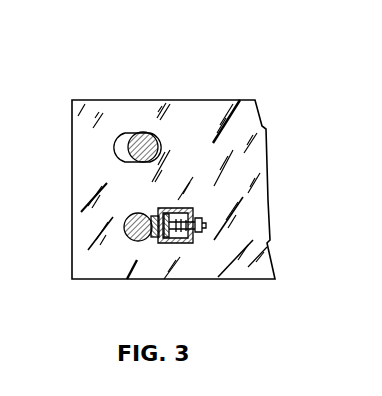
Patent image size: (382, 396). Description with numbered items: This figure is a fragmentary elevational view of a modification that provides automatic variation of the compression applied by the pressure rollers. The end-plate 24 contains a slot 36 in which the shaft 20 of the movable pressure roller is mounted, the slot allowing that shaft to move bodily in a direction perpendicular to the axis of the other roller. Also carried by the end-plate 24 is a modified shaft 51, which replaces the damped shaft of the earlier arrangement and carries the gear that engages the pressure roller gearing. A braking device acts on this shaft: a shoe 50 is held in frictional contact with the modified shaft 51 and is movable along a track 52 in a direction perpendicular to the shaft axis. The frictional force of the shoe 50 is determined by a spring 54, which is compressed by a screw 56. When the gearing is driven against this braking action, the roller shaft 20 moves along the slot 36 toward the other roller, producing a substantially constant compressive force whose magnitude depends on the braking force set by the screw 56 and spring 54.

The end-plate 24 is at (106, 111).
The slot 36 is at (113, 141).
The shaft 20 is at (141, 162).
The modified shaft 51 is at (128, 228).
The shoe 50 is at (153, 243).
The spring 54 is at (188, 243).
The track 52 is at (196, 210).
The screw 56 is at (205, 225).